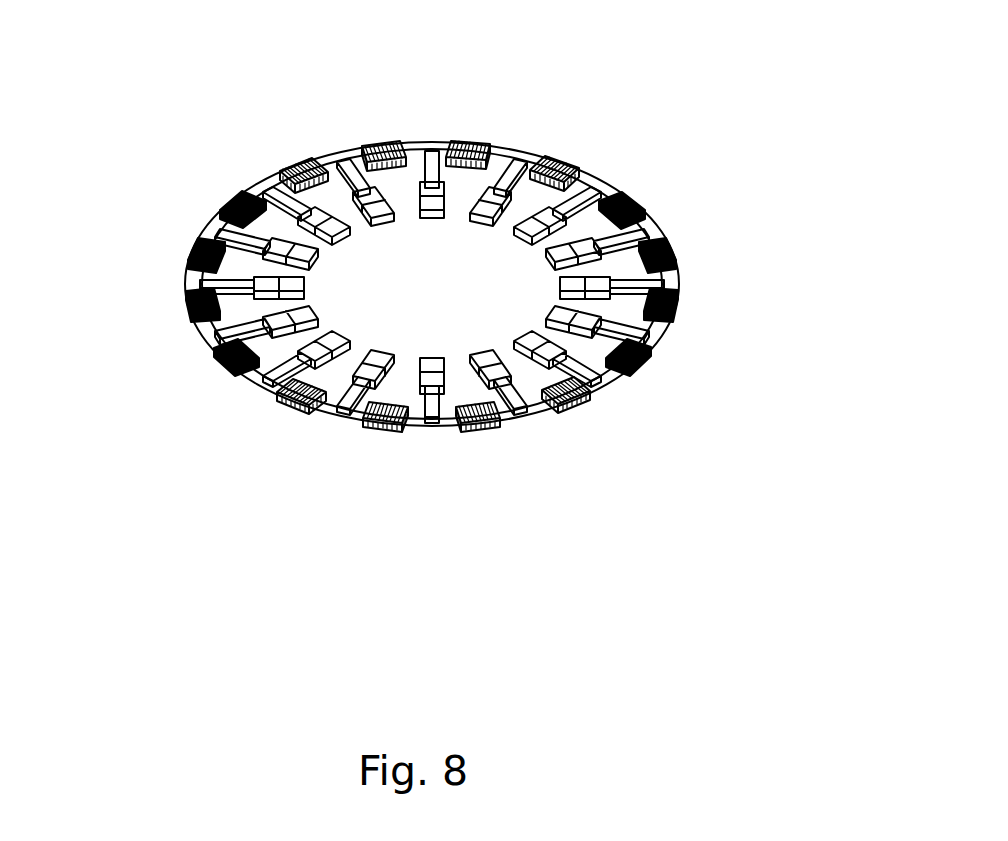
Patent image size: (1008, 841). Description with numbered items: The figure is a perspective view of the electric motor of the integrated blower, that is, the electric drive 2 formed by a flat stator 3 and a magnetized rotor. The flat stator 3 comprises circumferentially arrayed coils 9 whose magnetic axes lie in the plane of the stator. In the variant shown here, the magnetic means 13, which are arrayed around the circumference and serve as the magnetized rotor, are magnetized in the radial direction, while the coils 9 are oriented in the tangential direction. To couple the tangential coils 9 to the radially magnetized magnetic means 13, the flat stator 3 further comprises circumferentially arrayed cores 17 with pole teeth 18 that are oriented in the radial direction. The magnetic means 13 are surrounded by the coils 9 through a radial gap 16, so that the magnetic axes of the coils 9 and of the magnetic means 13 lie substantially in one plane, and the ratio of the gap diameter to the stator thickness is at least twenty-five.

The electric drive 2 is at (466, 282).
The flat stator 3 is at (680, 280).
The coils 9 is at (226, 362).
The magnetic means 13 is at (370, 374).
The radial gap 16 is at (252, 282).
The cores 17 is at (428, 167).
The poles teeth 18 is at (277, 193).